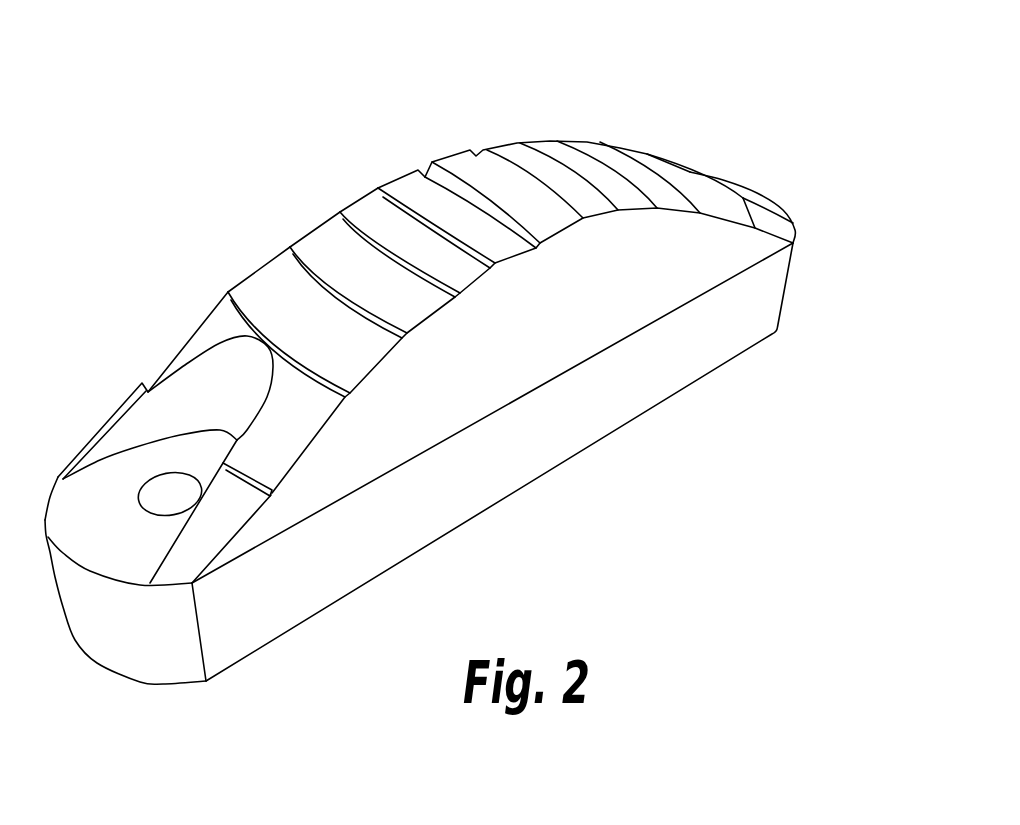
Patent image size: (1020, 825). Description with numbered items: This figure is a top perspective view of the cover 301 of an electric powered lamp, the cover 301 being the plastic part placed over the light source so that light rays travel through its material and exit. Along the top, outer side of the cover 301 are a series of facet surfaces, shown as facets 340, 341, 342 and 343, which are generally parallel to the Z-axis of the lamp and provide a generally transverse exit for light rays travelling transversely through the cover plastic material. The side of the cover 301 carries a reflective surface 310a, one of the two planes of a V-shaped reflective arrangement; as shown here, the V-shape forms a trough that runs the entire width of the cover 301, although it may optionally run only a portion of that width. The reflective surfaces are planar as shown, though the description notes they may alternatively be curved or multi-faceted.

The cover 301 is at (600, 326).
The reflective surface 310a is at (544, 242).
The facet 340 is at (431, 228).
The facet 341 is at (370, 245).
The facet 342 is at (320, 283).
The first tread step 343 is at (236, 313).